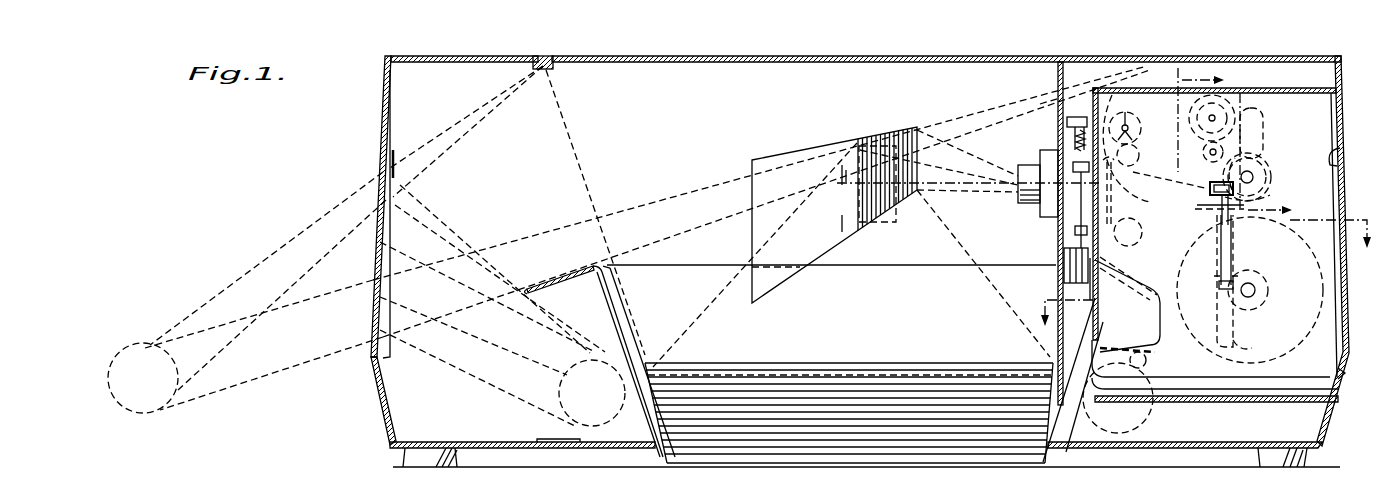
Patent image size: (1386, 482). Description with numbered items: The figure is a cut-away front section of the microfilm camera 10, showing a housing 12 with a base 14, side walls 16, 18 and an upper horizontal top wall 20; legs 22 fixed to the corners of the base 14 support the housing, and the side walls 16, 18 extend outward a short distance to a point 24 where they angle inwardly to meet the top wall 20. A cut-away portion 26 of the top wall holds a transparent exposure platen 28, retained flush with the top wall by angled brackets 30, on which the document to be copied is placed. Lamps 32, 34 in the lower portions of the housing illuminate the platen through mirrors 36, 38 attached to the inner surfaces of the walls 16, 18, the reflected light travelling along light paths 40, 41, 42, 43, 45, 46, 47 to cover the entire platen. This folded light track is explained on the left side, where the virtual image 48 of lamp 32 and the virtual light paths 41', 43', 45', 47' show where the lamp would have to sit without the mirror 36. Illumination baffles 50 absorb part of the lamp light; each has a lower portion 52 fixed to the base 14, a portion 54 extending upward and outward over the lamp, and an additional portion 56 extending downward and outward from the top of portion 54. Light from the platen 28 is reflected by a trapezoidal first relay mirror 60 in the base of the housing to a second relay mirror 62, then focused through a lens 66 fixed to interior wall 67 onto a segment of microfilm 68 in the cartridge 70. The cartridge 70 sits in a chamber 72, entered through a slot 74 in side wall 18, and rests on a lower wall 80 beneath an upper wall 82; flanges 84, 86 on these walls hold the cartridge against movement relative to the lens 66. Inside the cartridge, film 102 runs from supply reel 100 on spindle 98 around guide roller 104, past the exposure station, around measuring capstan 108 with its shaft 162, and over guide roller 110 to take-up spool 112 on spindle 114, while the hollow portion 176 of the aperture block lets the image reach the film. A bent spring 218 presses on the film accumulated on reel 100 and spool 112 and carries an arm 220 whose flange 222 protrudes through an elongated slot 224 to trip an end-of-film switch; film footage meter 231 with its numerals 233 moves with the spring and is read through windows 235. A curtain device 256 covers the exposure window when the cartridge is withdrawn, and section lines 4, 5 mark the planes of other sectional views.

The section line 4- 4 is at (1204, 282).
The section line 5- 5 is at (1242, 146).
The microfilm camera 10 is at (368, 104).
The housing 12 is at (385, 128).
The base 14 is at (527, 450).
The side wall 16 is at (388, 318).
The side wall 18 is at (1346, 293).
The top wall 20 is at (466, 57).
The legs 22 is at (400, 455).
The point 24 is at (372, 363).
The cut-away portion 26 is at (546, 57).
The exposure platen 28 is at (705, 64).
The angled brackets 30 is at (545, 70).
The lamp 32 is at (604, 430).
The lamp 34 is at (1150, 414).
The mirror 36 is at (394, 160).
The mirror 38 is at (1340, 152).
The light path 40 is at (546, 308).
The light path 41 is at (466, 117).
The light path 42 is at (506, 356).
The light path 43 is at (468, 131).
The light path 45 is at (760, 173).
The light path 46 is at (502, 393).
The light path 47 is at (766, 203).
The virtual light path 41' is at (266, 258).
The virtual light path 43' is at (282, 295).
The virtual light path 45' is at (259, 302).
The virtual light path 47' is at (271, 373).
The virtual image of light source 48 is at (140, 412).
The illumination baffle 50 is at (613, 328).
The lower portion 52 is at (576, 448).
The portion 54 is at (634, 343).
The additional portion 56 is at (580, 270).
The first relay mirror 60 is at (818, 130).
The second relay mirror 62 is at (915, 267).
The lens 66 is at (1035, 162).
The interior wall 67 is at (1056, 97).
The segment of microfilm 68 is at (1126, 218).
The cartridge 70 is at (1292, 89).
The chamber 72 is at (1096, 93).
The slot 74 is at (1338, 389).
The lower wall 80 is at (1275, 403).
The upper wall 82 is at (1257, 89).
The flange 84 is at (1075, 450).
The flange 86 is at (1066, 81).
The spindle 98 is at (1262, 273).
The supply reel 100 is at (1282, 363).
The film 102 is at (1150, 155).
The guide roller 104 is at (1138, 258).
The measuring capstan 108 is at (1162, 108).
The guide roller 110 is at (1160, 140).
The take-up spool 112 is at (1272, 138).
The spindle 114 is at (1257, 164).
The shaft 162 is at (1125, 112).
The hollow portion 176 is at (1134, 180).
The bent spring 218 is at (1197, 205).
The arm 220 is at (1216, 262).
The flange 222 is at (1216, 298).
The elongated slot 224 is at (1261, 349).
The film footage meter 231 is at (1266, 118).
The numerals 233 is at (1208, 183).
The window 235 is at (1272, 190).
The curtain device 256 is at (1165, 348).